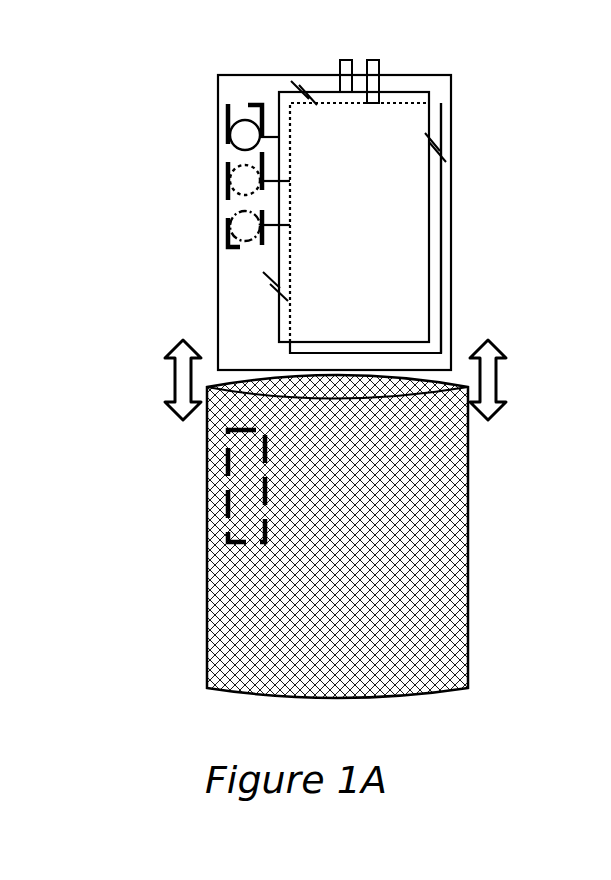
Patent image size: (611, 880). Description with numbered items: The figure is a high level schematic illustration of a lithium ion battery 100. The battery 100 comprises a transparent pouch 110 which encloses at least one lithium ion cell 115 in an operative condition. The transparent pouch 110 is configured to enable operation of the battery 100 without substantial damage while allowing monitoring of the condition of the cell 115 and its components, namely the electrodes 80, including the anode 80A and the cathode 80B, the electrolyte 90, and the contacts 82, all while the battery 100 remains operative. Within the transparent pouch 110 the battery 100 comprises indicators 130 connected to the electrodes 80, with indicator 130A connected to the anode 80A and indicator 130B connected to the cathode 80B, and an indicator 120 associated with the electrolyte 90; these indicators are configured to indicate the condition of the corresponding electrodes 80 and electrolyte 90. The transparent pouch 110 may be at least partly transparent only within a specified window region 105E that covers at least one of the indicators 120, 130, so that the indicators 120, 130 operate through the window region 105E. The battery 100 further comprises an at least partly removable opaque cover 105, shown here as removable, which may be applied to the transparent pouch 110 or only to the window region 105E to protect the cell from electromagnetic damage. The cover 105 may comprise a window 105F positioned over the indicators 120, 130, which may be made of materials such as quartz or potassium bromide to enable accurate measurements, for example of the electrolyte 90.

The lithium ion battery 100 is at (171, 34).
The transparent pouch 110 is at (218, 87).
The lithium ion cell 115 is at (388, 144).
The contacts 82 is at (340, 60).
The electrolyte 90 is at (280, 237).
The electrodes 80 is at (517, 228).
The anode 80A is at (443, 257).
The cathode 80B is at (442, 302).
The indicators 130 is at (179, 152).
The indicator 130A is at (228, 136).
The indicator 130B is at (228, 181).
The indicator 120 is at (228, 224).
The window region 105E is at (228, 244).
The removable opaque cover 105 is at (207, 500).
The window 105F is at (228, 440).